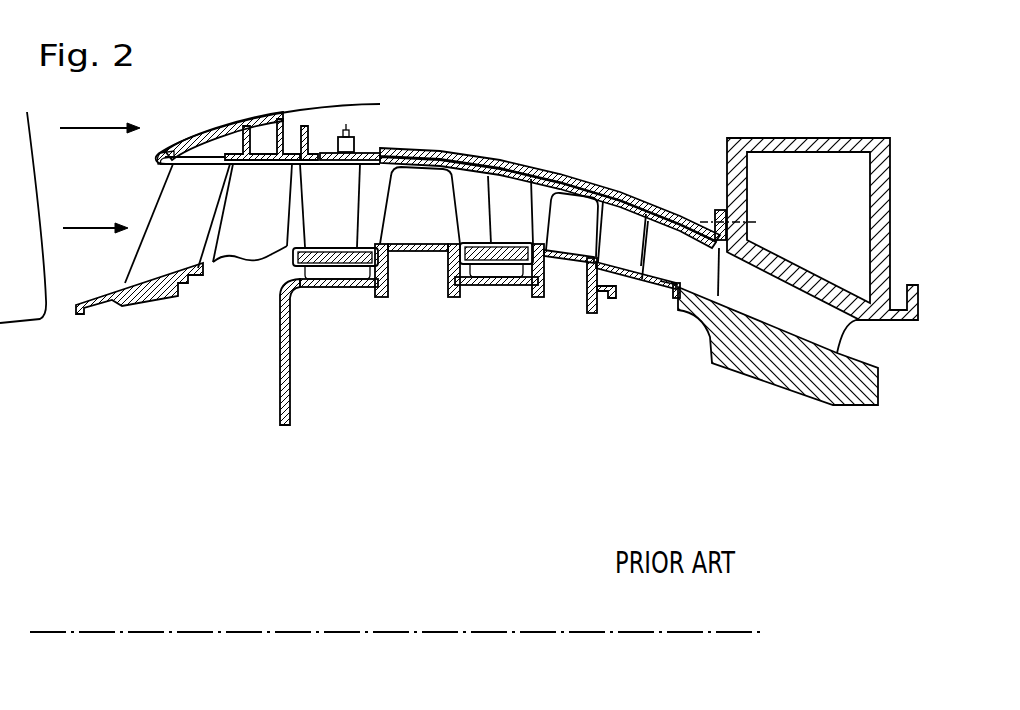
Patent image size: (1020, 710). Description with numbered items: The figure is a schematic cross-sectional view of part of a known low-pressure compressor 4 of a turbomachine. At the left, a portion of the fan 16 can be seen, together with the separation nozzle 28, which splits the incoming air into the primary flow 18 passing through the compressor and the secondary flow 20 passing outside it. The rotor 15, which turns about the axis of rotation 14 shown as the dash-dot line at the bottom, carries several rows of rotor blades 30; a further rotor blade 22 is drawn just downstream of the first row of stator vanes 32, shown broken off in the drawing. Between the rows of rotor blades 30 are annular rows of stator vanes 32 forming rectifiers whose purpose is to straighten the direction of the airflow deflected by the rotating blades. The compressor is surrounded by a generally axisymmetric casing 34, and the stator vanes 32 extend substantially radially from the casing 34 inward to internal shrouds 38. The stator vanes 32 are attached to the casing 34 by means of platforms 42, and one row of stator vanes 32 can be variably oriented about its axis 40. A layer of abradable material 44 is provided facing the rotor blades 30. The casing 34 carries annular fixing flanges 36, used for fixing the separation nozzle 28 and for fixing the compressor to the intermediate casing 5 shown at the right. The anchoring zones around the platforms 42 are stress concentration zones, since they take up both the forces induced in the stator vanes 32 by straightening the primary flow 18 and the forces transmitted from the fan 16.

The low-pressure compressor 4 is at (672, 112).
The intermediate casing 5 is at (827, 118).
The axis of rotation 14 is at (493, 630).
The rotor 15 is at (289, 408).
The fan 16 is at (36, 230).
The primary flow 18 is at (95, 214).
The secondary flow 20 is at (100, 114).
The rotor blade 22 is at (276, 229).
The separation nozzle 28 is at (158, 158).
The rotor blades 30 is at (435, 226).
The stator vanes 32 is at (193, 235).
The casing 34 is at (590, 130).
The fixing flanges 36 is at (310, 127).
The internal shrouds 38 is at (343, 283).
The axis 40 is at (354, 134).
The platforms 42 is at (332, 152).
The layer of abradable material 44 is at (387, 170).